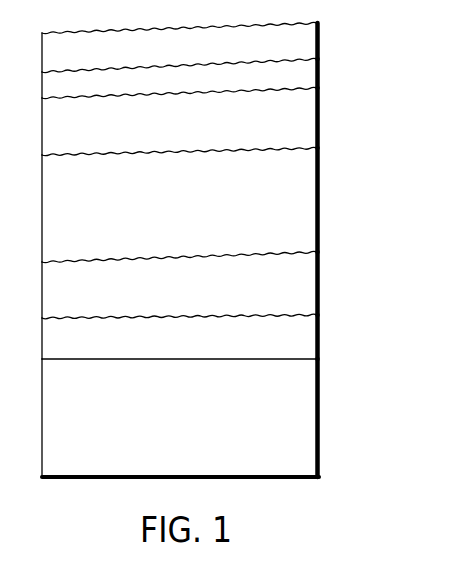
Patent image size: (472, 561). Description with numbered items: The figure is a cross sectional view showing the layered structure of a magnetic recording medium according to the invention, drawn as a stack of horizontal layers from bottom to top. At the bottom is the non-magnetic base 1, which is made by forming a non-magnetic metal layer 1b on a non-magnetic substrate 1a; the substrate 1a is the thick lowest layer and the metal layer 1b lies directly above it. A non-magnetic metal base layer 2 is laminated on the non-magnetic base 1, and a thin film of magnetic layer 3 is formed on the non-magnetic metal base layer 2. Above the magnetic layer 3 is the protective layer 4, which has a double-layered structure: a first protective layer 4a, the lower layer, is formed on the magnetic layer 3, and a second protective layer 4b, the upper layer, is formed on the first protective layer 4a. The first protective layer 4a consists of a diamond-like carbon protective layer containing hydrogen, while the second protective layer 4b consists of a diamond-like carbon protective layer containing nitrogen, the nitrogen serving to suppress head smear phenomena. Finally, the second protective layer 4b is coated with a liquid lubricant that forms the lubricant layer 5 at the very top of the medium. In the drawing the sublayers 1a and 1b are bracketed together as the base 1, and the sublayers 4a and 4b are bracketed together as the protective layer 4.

The non-magnetic base 1 is at (232, 392).
The non-magnetic substrate 1a is at (320, 385).
The non-magnetic metal layer 1b is at (217, 336).
The non-magnetic metal base layer 2 is at (320, 280).
The magnetic layer 3 is at (320, 202).
The protective layer 4 is at (227, 104).
The first protective layer 4a is at (320, 115).
The second protective layer 4b is at (320, 70).
The lubricant layer 5 is at (320, 41).